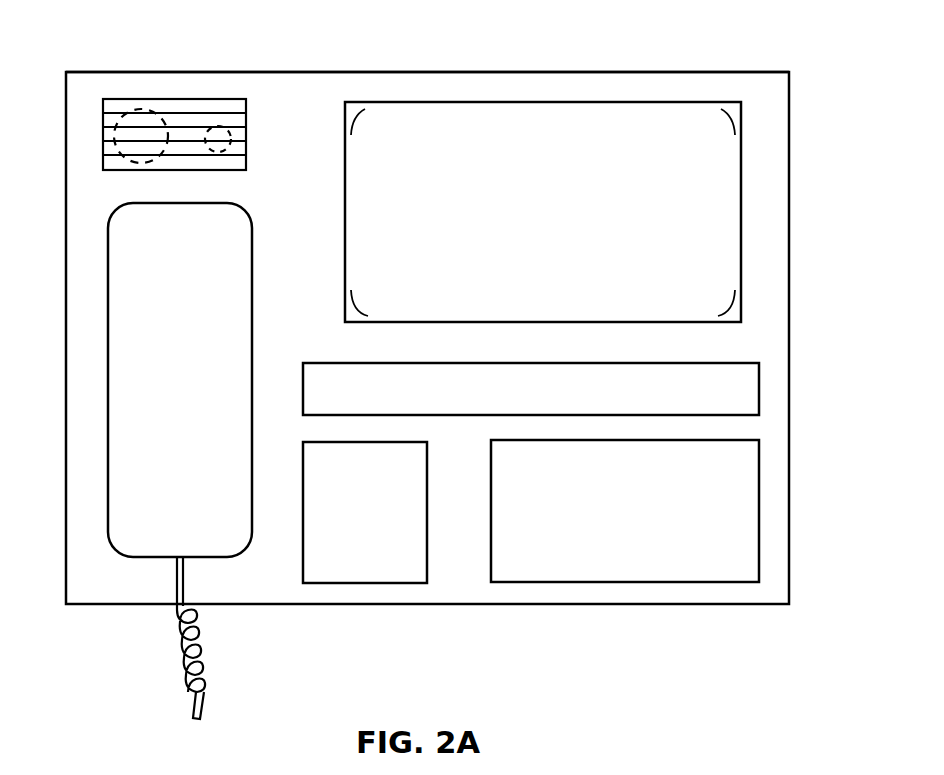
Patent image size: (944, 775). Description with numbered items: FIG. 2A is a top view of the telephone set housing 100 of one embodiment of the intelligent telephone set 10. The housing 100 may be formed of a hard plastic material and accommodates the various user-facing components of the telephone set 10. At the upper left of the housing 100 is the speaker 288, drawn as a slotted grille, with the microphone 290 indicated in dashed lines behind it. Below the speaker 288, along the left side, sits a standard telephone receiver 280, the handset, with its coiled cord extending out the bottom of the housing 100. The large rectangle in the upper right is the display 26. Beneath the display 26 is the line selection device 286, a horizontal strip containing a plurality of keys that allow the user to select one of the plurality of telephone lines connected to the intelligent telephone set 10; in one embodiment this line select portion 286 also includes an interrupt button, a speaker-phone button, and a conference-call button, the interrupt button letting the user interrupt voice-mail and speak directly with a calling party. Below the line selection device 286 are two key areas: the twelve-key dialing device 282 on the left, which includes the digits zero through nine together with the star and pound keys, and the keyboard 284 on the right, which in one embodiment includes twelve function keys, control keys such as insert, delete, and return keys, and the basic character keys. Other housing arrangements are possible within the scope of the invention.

The intelligent telephone set 10 is at (745, 43).
The telephone set housing 100 is at (790, 141).
The speaker 288 is at (113, 131).
The microphone 290 is at (226, 148).
The telephone receiver 280 is at (115, 420).
The display 26 is at (718, 238).
The line selection device 286 is at (740, 390).
The twelve-key dialing device 282 is at (380, 565).
The keyboard 284 is at (612, 565).